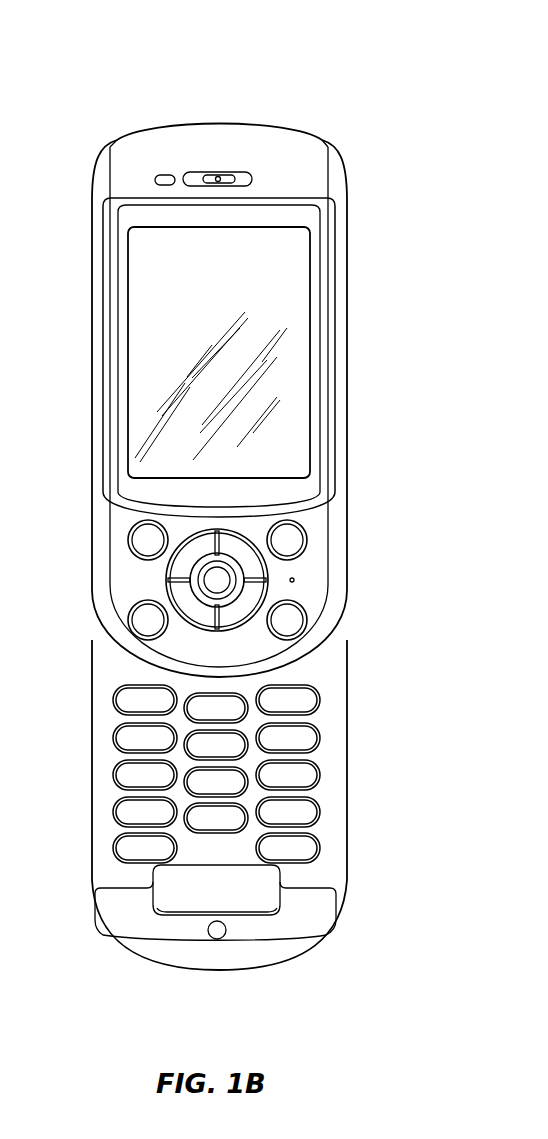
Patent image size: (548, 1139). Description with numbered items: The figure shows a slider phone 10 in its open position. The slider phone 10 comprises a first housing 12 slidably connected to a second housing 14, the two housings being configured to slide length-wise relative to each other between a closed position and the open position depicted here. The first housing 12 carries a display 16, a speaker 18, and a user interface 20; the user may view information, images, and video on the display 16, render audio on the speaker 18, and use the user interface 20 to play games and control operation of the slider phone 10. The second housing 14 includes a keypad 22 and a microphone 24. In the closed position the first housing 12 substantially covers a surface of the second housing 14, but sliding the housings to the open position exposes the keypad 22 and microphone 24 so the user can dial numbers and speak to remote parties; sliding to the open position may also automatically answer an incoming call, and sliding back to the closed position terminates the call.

The slider phone 10 is at (298, 63).
The first housing 12 is at (100, 168).
The second housing 14 is at (343, 833).
The display 16 is at (147, 286).
The speaker 18 is at (218, 175).
The user interface 20 is at (158, 571).
The keypad 22 is at (330, 746).
The microphone 24 is at (217, 938).